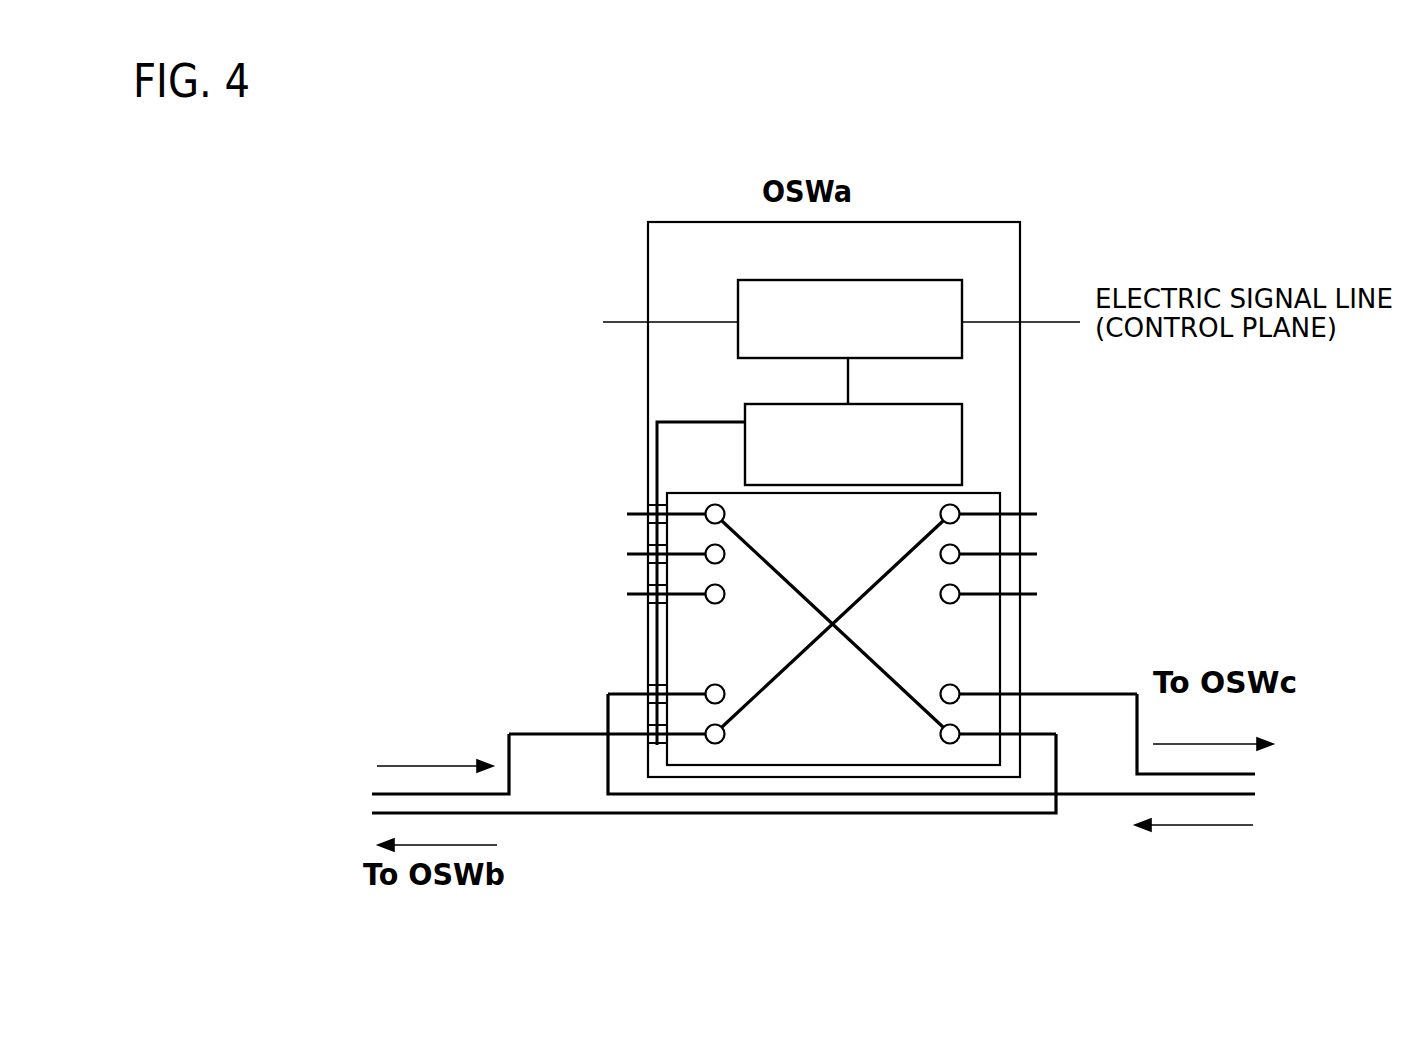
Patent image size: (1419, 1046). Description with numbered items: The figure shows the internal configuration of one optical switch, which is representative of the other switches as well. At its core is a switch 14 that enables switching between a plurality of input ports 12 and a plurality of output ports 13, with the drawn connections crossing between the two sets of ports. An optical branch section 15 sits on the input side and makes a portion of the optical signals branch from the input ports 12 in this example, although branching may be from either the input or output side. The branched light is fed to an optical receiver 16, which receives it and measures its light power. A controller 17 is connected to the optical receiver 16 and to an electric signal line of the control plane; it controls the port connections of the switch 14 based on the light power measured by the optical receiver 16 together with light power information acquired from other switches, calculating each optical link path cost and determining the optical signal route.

The input ports 12 is at (561, 624).
The output ports 13 is at (1111, 624).
The switch 14 is at (848, 734).
The optical branch section 15 is at (707, 507).
The optical receiver 16 is at (853, 444).
The controller 17 is at (850, 319).